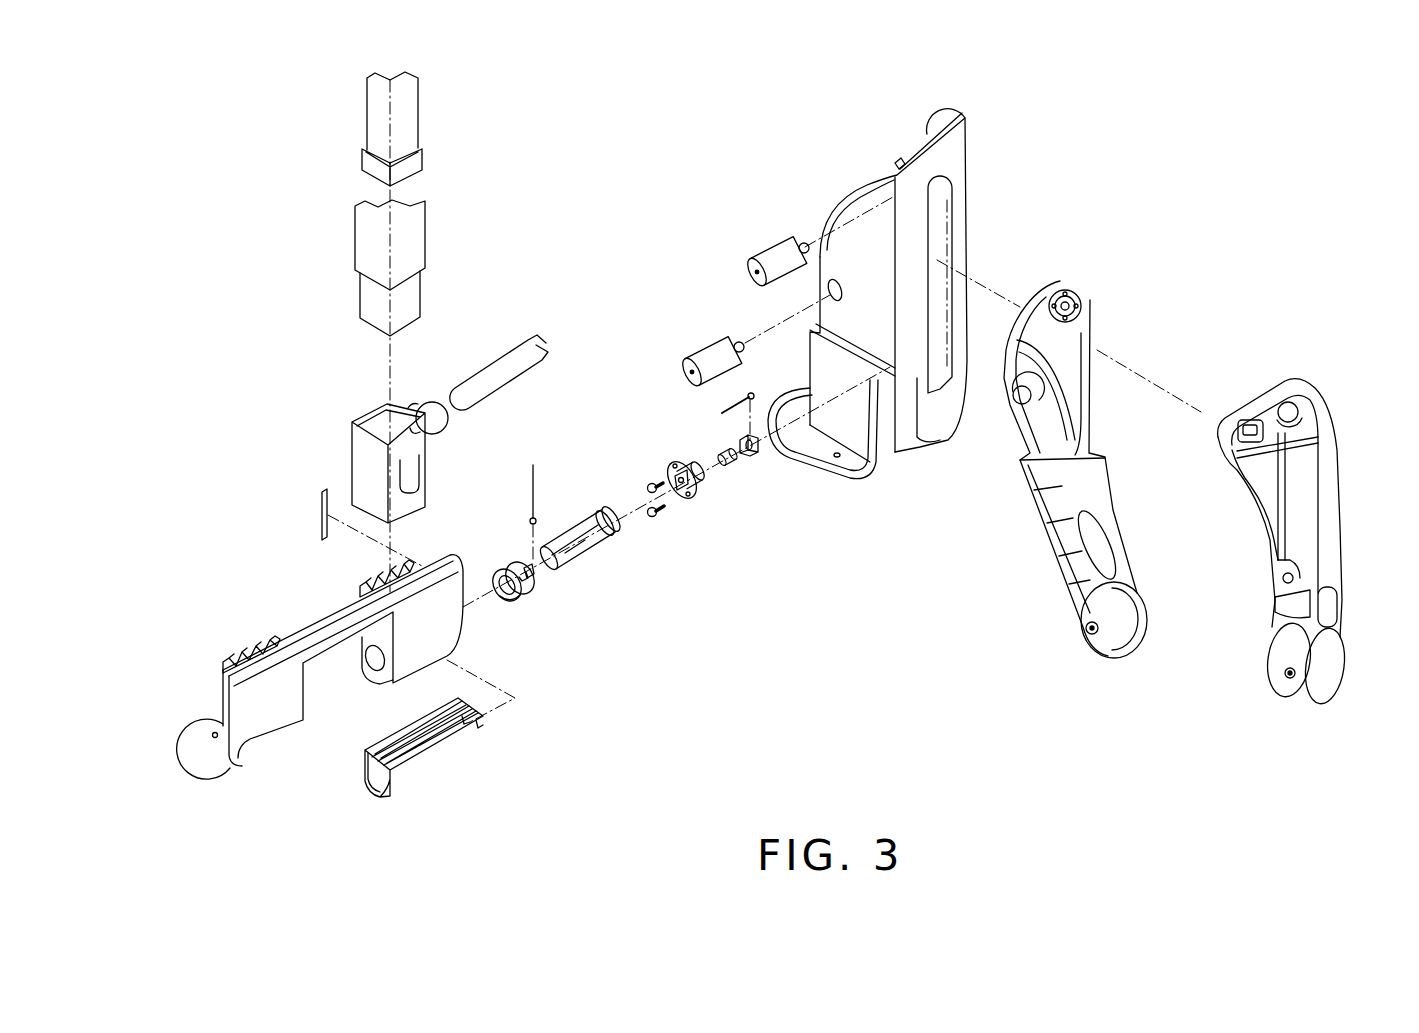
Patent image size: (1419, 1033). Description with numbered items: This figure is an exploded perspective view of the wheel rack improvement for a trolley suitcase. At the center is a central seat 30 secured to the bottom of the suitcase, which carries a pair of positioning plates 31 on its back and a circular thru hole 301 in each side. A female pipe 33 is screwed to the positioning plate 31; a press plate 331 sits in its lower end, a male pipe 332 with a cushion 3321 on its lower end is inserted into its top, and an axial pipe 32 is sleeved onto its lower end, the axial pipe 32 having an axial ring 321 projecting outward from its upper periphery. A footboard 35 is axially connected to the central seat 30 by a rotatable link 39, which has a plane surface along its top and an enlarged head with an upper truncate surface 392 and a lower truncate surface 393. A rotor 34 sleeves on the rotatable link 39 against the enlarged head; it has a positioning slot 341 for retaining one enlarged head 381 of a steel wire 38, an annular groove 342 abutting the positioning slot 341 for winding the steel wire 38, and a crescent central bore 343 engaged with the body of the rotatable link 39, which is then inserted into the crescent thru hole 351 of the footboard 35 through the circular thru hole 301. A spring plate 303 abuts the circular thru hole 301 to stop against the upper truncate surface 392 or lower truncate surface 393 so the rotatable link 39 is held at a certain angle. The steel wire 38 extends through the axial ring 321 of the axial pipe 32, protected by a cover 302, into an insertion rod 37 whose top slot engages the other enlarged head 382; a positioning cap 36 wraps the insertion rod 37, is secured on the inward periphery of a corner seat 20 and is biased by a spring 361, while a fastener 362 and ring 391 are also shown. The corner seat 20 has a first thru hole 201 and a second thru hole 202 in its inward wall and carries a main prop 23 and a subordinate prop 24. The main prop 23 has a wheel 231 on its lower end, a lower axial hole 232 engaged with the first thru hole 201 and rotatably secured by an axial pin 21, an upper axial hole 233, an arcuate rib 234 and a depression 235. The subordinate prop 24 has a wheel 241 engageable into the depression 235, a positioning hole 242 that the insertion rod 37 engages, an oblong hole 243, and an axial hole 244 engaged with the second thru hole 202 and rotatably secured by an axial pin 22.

The corner seat 20 is at (960, 172).
The first thru hole 201 is at (830, 292).
The second thru hole 202 is at (897, 161).
The axial pin 21 is at (715, 357).
The axial pin 22 is at (780, 250).
The main prop 23 is at (1052, 514).
The wheel 231 is at (1125, 655).
The lower axial hole 232 is at (1022, 405).
The upper axial hole 233 is at (1080, 308).
The arcuate rib 234 is at (1059, 378).
The depression 235 is at (1095, 539).
The subordinate prop 24 is at (1323, 500).
The wheel 241 is at (1330, 690).
The positioning hole 242 is at (1285, 580).
The oblong hole 243 is at (1240, 440).
The axial hole 244 is at (1288, 412).
The central seat 30 is at (258, 713).
The circular thru hole 301 is at (370, 673).
The cover 302 is at (525, 340).
The spring plate 303 is at (318, 497).
The positioning plate 31 is at (365, 587).
The axial pipe 32 is at (360, 457).
The axial ring 321 is at (438, 427).
The female pipe 33 is at (370, 233).
The press plate 331 is at (368, 298).
The male pipe 332 is at (372, 113).
The cushion 3321 is at (372, 165).
The rotor 34 is at (523, 593).
The positioning slot 341 is at (532, 572).
The annular groove 342 is at (538, 573).
The crescent central bore 343 is at (517, 597).
The footboard 35 is at (447, 760).
The crescent thru hole 351 is at (373, 793).
The positioning cap 36 is at (695, 487).
The spring 361 is at (732, 458).
The screw 362 is at (663, 508).
The insertion rod 37 is at (755, 450).
The steel wire 38 is at (533, 490).
The enlarged head 381 is at (536, 518).
The enlarged head 382 is at (750, 393).
The rotatable link 39 is at (593, 542).
The ring 391 is at (563, 547).
The upper truncate surface 392 is at (613, 528).
The lower truncate surface 393 is at (608, 533).